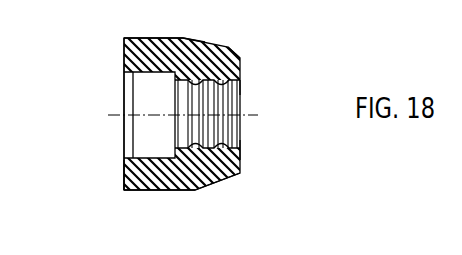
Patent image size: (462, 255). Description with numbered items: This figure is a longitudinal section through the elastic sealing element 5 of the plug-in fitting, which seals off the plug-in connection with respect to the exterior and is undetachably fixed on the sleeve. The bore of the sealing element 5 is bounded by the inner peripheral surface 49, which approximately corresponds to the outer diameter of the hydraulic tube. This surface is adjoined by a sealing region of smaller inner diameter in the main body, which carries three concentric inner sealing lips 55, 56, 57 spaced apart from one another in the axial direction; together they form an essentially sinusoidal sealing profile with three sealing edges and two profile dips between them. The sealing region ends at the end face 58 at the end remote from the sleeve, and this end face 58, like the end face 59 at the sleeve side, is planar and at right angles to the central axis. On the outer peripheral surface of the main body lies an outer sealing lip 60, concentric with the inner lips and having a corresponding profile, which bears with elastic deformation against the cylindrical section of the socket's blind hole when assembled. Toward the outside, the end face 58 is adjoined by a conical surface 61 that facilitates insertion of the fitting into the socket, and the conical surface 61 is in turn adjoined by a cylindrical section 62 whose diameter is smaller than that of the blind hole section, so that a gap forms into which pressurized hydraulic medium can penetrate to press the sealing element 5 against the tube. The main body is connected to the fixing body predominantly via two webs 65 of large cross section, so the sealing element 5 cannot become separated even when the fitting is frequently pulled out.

The sealing element 5 is at (142, 193).
The inner peripheral surface 49 is at (164, 148).
The inner sealing lip 55 is at (133, 94).
The inner sealing lip 56 is at (226, 100).
The inner sealing lip 57 is at (238, 90).
The end face 58 is at (240, 152).
The end face 59 is at (124, 171).
The outer sealing lip 60 is at (200, 37).
The conical surface 61 is at (233, 50).
The cylindrical section 62 is at (217, 184).
The web 65 is at (151, 44).